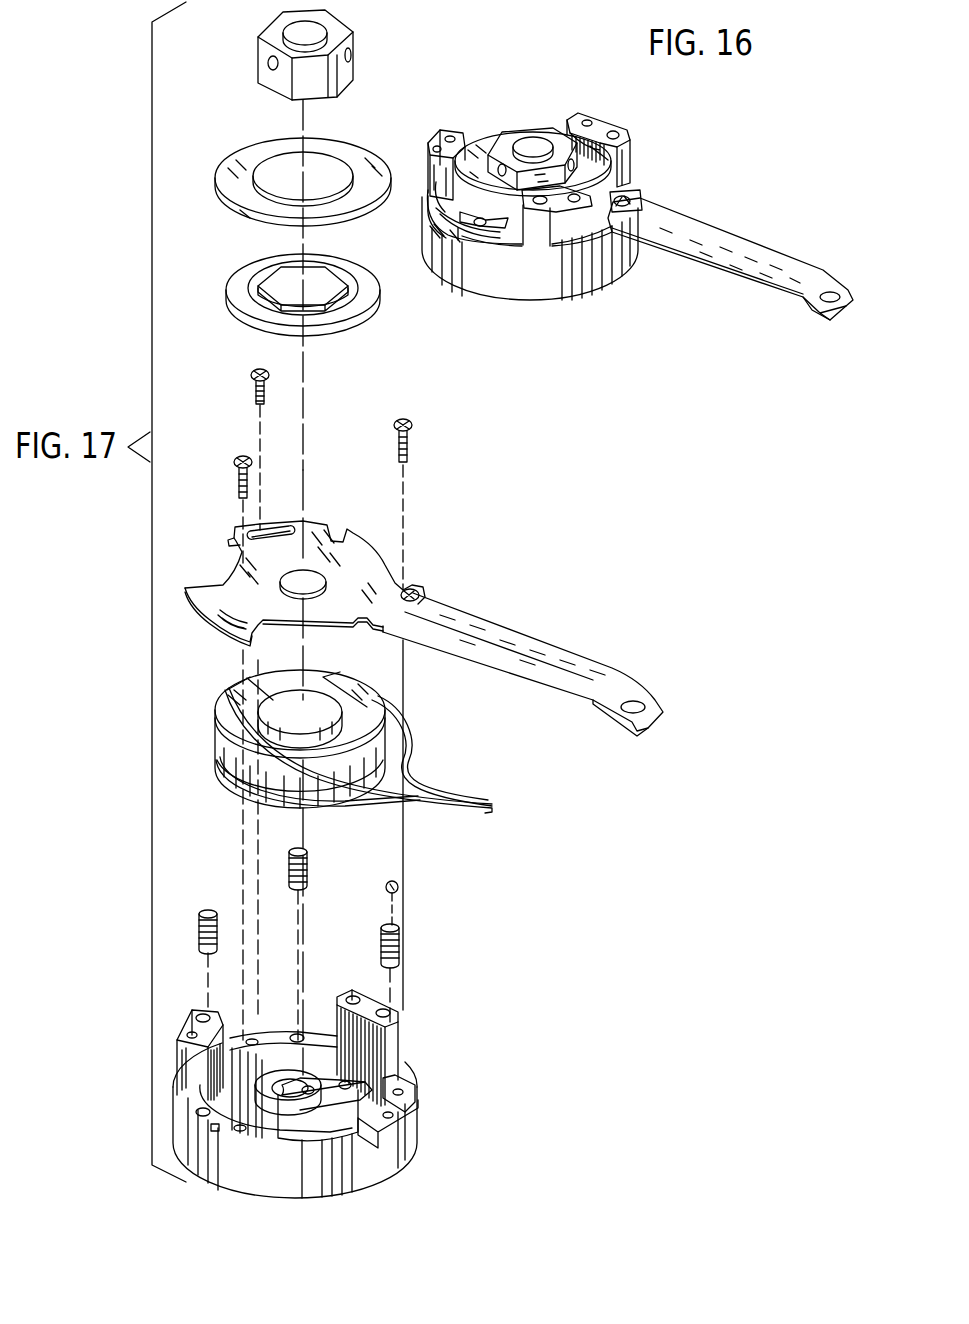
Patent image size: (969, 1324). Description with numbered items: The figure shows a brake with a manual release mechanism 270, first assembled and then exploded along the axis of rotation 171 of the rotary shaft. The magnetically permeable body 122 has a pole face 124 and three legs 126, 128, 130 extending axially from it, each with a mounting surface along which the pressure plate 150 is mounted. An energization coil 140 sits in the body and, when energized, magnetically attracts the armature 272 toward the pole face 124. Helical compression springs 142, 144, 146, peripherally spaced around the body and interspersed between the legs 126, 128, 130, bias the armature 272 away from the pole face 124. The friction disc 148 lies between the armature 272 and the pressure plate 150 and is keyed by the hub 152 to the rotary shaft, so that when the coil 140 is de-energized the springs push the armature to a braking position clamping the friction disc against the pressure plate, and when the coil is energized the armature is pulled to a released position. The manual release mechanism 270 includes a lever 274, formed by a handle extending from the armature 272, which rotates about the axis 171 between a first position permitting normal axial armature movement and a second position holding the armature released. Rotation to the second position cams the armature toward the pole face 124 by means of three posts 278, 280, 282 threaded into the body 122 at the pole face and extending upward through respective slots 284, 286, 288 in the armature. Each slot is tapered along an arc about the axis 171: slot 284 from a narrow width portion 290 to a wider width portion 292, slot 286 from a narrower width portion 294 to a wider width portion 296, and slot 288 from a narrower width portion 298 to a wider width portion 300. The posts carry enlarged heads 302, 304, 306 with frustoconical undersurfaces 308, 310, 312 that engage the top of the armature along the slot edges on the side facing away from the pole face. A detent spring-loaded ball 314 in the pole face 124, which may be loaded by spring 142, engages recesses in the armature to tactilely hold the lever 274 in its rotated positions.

In FIG. 17, the magnetically permeable body 122 is at (412, 1125).
In FIG. 17, the pole face 124 is at (382, 1135).
In FIG. 16, the leg 126 is at (625, 120).
In FIG. 16, the leg 128 is at (572, 240).
In FIG. 16, the leg 130 is at (436, 145).
In FIG. 17, the energization coil 140 is at (225, 740).
In FIG. 17, the helical compression spring 142 is at (402, 960).
In FIG. 17, the helical compression spring 144 is at (197, 940).
In FIG. 17, the helical compression spring 146 is at (310, 872).
In FIG. 17, the friction disc 148 is at (345, 325).
In FIG. 16, the pressure plate 150 is at (493, 128).
In FIG. 17, the pressure plate 150 is at (340, 150).
In FIG. 16, the hub 152 is at (530, 140).
In FIG. 17, the hub 152 is at (355, 32).
In FIG. 17, the axis of rotation 171 is at (305, 430).
In FIG. 16, the manual release mechanism 270 is at (686, 186).
In FIG. 16, the armature 272 is at (425, 240).
In FIG. 17, the armature 272 is at (317, 573).
In FIG. 16, the lever 274 is at (748, 262).
In FIG. 17, the lever 274 is at (530, 650).
In FIG. 17, the post 278 is at (410, 452).
In FIG. 17, the post 280 is at (238, 500).
In FIG. 17, the post 282 is at (254, 400).
In FIG. 17, the slot 284 is at (329, 579).
In FIG. 17, the slot 286 is at (243, 618).
In FIG. 17, the slot 288 is at (288, 540).
In FIG. 17, the narrow width portion 290 is at (405, 630).
In FIG. 17, the wider width portion 292 is at (417, 585).
In FIG. 17, the narrower width portion 294 is at (215, 630).
In FIG. 17, the wider width portion 296 is at (240, 640).
In FIG. 17, the narrower width portion 298 is at (295, 527).
In FIG. 17, the wider width portion 300 is at (258, 530).
In FIG. 16, the enlarged head 302 is at (632, 200).
In FIG. 17, the enlarged head 302 is at (410, 418).
In FIG. 16, the enlarged head 304 is at (478, 230).
In FIG. 17, the enlarged head 304 is at (235, 455).
In FIG. 17, the enlarged head 306 is at (255, 368).
In FIG. 17, the frustoconical undersurface 308 is at (412, 432).
In FIG. 17, the frustoconical undersurface 310 is at (236, 480).
In FIG. 17, the frustoconical undersurface 312 is at (250, 378).
In FIG. 17, the spring-loaded ball 314 is at (400, 885).